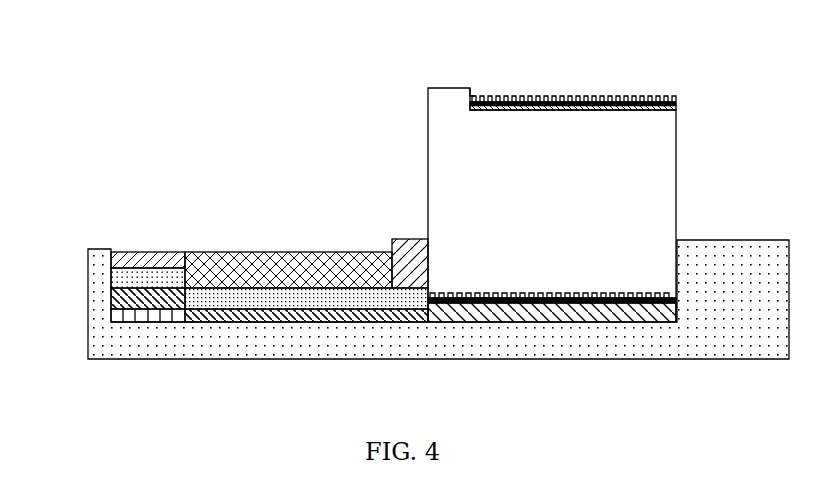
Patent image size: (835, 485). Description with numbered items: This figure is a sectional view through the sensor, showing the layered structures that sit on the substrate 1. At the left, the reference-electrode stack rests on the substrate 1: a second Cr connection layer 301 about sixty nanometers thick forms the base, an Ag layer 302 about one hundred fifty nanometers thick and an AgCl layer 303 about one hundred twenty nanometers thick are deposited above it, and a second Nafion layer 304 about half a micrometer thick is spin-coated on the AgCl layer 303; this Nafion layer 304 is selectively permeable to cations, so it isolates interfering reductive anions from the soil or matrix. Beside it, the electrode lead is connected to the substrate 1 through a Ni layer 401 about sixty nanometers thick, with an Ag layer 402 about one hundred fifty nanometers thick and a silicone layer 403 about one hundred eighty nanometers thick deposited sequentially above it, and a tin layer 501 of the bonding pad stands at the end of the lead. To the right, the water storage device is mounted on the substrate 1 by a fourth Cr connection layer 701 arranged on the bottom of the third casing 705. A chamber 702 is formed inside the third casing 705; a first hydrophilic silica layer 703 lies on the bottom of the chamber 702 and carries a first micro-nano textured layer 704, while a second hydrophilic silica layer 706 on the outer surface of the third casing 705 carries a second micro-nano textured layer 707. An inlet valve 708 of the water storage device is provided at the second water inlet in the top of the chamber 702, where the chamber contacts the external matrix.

The substrate 1 is at (137, 353).
The second Cr connection layer 301 is at (120, 318).
The Ag layer 302 is at (128, 292).
The AgCl layer 303 is at (173, 267).
The second Nafion layer 304 is at (115, 258).
The Ni layer 401 is at (298, 317).
The Ag layer 402 is at (203, 303).
The silicone layer 403 is at (232, 272).
The tin layer 501 is at (408, 268).
The fourth Cr connection layer 701 is at (573, 315).
The chamber 702 is at (658, 150).
The first hydrophilic silica layer 703 is at (510, 305).
The first micro-nano textured layer 704 is at (632, 297).
The third casing 705 is at (647, 96).
The second hydrophilic silica layer 706 is at (594, 96).
The second micro-nano textured layer 707 is at (527, 96).
The inlet valve of the water storage device 708 is at (470, 96).